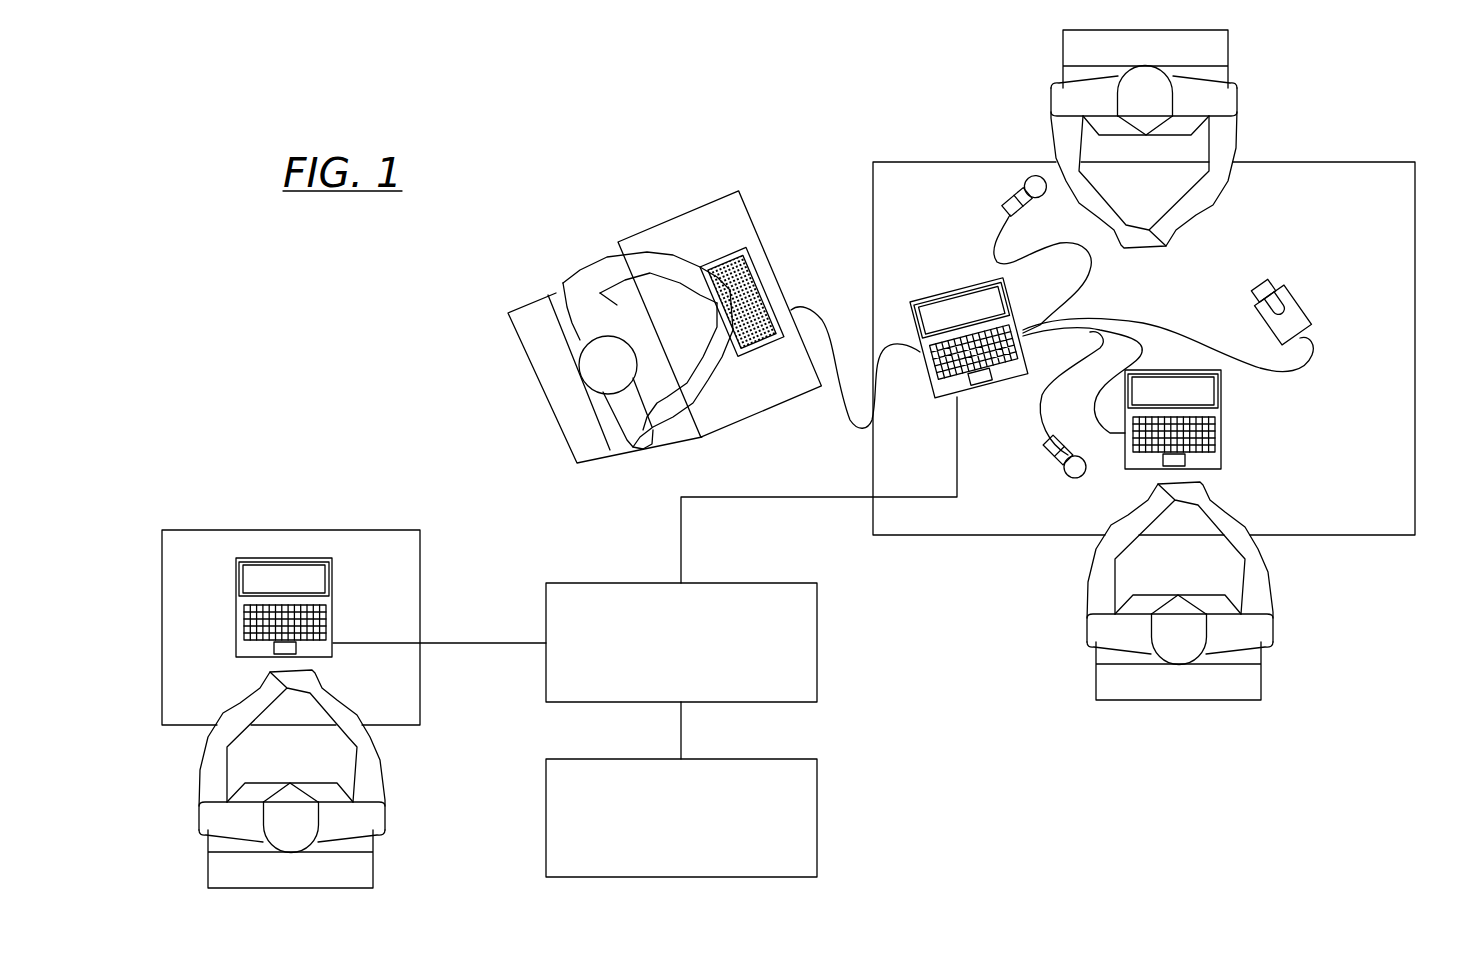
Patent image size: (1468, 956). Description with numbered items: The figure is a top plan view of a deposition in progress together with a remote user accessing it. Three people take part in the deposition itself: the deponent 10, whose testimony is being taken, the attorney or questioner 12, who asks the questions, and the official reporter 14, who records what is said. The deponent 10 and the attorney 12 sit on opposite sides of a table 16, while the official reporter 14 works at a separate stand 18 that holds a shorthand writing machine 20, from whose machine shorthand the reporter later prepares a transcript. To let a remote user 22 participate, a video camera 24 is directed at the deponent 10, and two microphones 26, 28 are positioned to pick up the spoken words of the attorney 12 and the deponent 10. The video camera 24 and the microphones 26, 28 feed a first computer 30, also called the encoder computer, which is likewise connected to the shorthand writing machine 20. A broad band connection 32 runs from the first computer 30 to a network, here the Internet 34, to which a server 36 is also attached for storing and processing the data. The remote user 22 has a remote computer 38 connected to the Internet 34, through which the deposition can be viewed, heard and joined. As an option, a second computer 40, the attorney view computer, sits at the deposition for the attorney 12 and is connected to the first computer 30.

The deponent 10 is at (1225, 135).
The attorney or questioner 12 is at (1257, 582).
The official reporter 14 is at (608, 277).
The table 16 is at (1400, 470).
The stand 18 is at (690, 208).
The shorthand writing machine 20 is at (735, 292).
The remote user 22 is at (367, 768).
The video camera 24 is at (1310, 310).
The microphone 26 is at (1045, 456).
The microphone 28 is at (1006, 196).
The first computer 30 is at (968, 292).
The broad band connection 32 is at (797, 497).
The Internet 34 is at (772, 659).
The server 36 is at (790, 811).
The remote computer 38 is at (337, 610).
The second computer 40 is at (1220, 445).